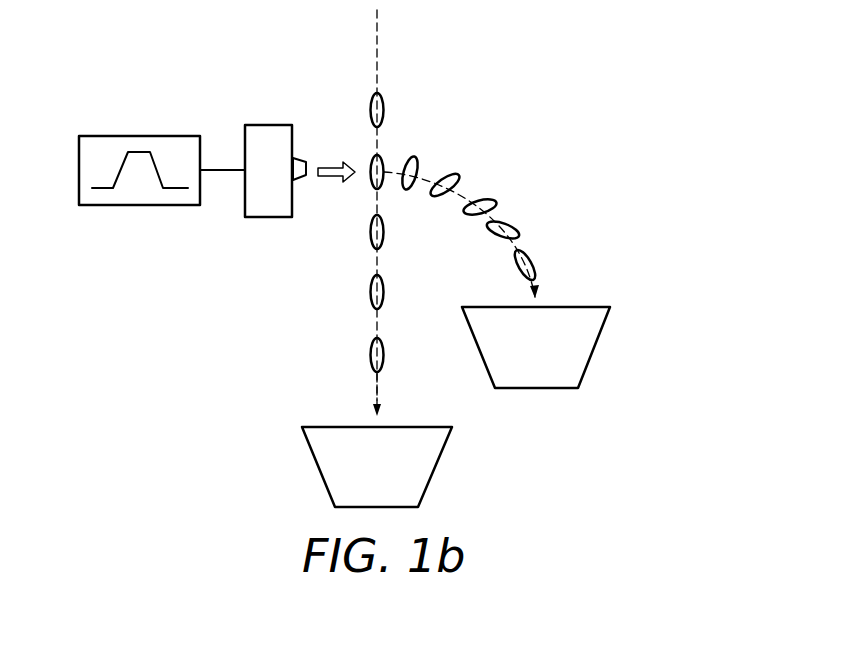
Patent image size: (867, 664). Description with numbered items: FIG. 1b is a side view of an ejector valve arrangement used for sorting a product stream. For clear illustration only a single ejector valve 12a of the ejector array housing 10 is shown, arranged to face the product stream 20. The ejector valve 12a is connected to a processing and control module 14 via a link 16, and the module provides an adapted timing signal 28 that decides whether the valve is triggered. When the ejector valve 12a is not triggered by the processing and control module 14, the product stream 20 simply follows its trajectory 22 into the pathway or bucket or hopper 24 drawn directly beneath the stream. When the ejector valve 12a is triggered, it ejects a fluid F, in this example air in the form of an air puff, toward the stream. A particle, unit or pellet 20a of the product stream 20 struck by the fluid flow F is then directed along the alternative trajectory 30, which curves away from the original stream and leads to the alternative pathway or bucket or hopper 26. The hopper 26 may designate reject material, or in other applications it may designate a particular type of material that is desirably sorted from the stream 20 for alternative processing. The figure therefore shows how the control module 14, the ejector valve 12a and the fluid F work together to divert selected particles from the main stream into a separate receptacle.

The ejector array housing 10 is at (270, 118).
The ejector valve 12a is at (297, 181).
The processing and control module 14 is at (101, 136).
The link 16 is at (220, 170).
The product stream 20 is at (378, 37).
The particle 20a is at (383, 166).
The trajectory 22 is at (378, 388).
The pathway or bucket or hopper 24 is at (455, 435).
The alternative pathway or bucket or hopper 26 is at (612, 315).
The adapted timing signal 28 is at (103, 189).
The trajectory 30 is at (474, 184).
The fluid F is at (329, 162).